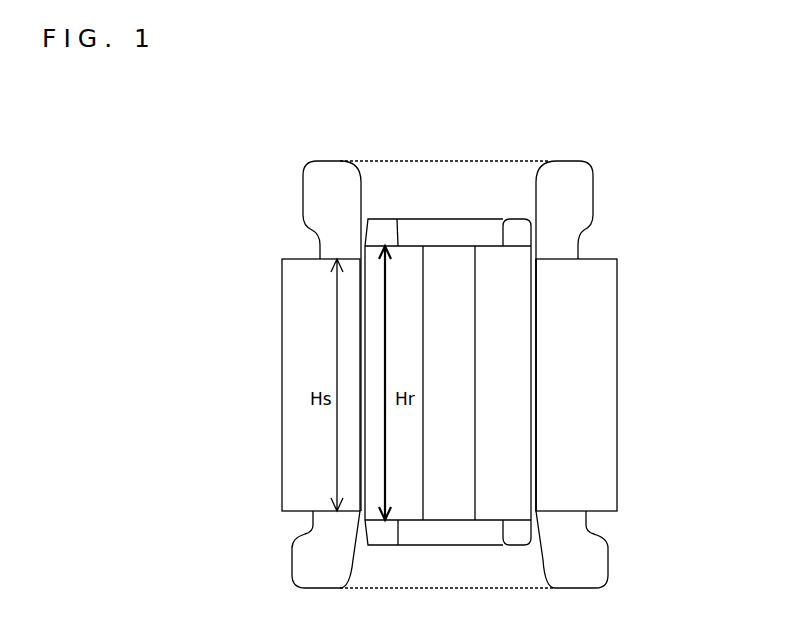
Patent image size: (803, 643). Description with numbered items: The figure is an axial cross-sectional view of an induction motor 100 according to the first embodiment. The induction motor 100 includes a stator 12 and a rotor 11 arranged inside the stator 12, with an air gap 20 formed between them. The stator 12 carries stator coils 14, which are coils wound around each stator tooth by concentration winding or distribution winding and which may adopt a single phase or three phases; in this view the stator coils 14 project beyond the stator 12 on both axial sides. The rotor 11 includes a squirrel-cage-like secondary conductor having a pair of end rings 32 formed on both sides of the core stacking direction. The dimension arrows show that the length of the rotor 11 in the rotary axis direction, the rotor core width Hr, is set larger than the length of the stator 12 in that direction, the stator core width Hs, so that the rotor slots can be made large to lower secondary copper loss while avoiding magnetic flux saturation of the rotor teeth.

The induction motor 100 is at (217, 170).
The stator coil 14 is at (583, 200).
The rotor 11 is at (513, 307).
The air gap 20 is at (536, 367).
The stator 12 is at (617, 435).
The end ring 32 is at (518, 533).